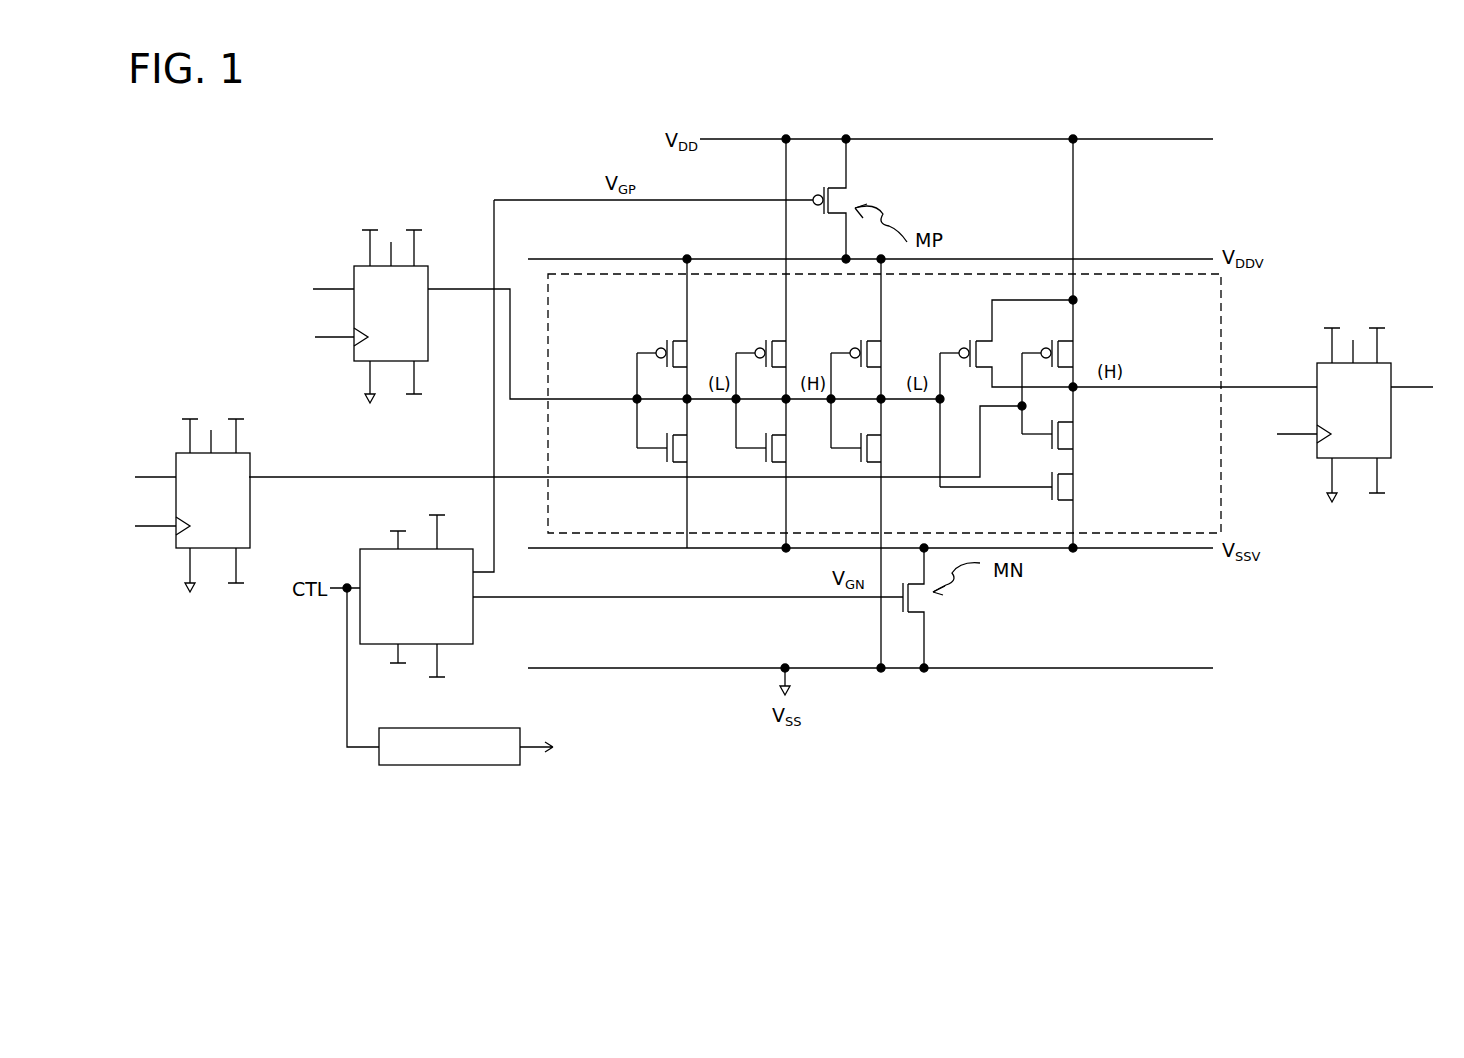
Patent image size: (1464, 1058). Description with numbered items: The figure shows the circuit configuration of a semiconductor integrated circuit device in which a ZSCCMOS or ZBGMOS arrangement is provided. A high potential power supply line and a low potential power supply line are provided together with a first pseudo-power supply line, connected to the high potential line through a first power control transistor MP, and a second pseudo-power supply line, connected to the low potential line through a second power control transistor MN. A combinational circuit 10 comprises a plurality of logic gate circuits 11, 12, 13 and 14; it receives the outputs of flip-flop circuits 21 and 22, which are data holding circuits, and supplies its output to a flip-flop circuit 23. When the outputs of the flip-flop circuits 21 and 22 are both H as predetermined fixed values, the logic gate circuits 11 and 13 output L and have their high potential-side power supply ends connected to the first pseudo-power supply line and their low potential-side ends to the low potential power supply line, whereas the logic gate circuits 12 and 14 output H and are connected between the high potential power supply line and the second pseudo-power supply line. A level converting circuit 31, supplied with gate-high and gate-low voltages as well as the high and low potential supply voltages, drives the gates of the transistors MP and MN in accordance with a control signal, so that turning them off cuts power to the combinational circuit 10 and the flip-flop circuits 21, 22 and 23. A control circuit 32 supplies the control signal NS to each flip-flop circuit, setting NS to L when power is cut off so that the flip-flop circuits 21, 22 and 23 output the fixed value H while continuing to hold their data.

The combinational circuit 10 is at (1221, 310).
The logic gate circuit 11 is at (658, 343).
The logic gate circuit 12 is at (756, 343).
The logic gate circuit 13 is at (854, 343).
The logic gate circuit 14 is at (954, 342).
The flip-flop circuit 21 is at (428, 346).
The flip-flop circuit 22 is at (250, 516).
The flip-flop circuit 23 is at (1391, 433).
The level converting circuit 31 is at (473, 628).
The control circuit 32 is at (466, 766).